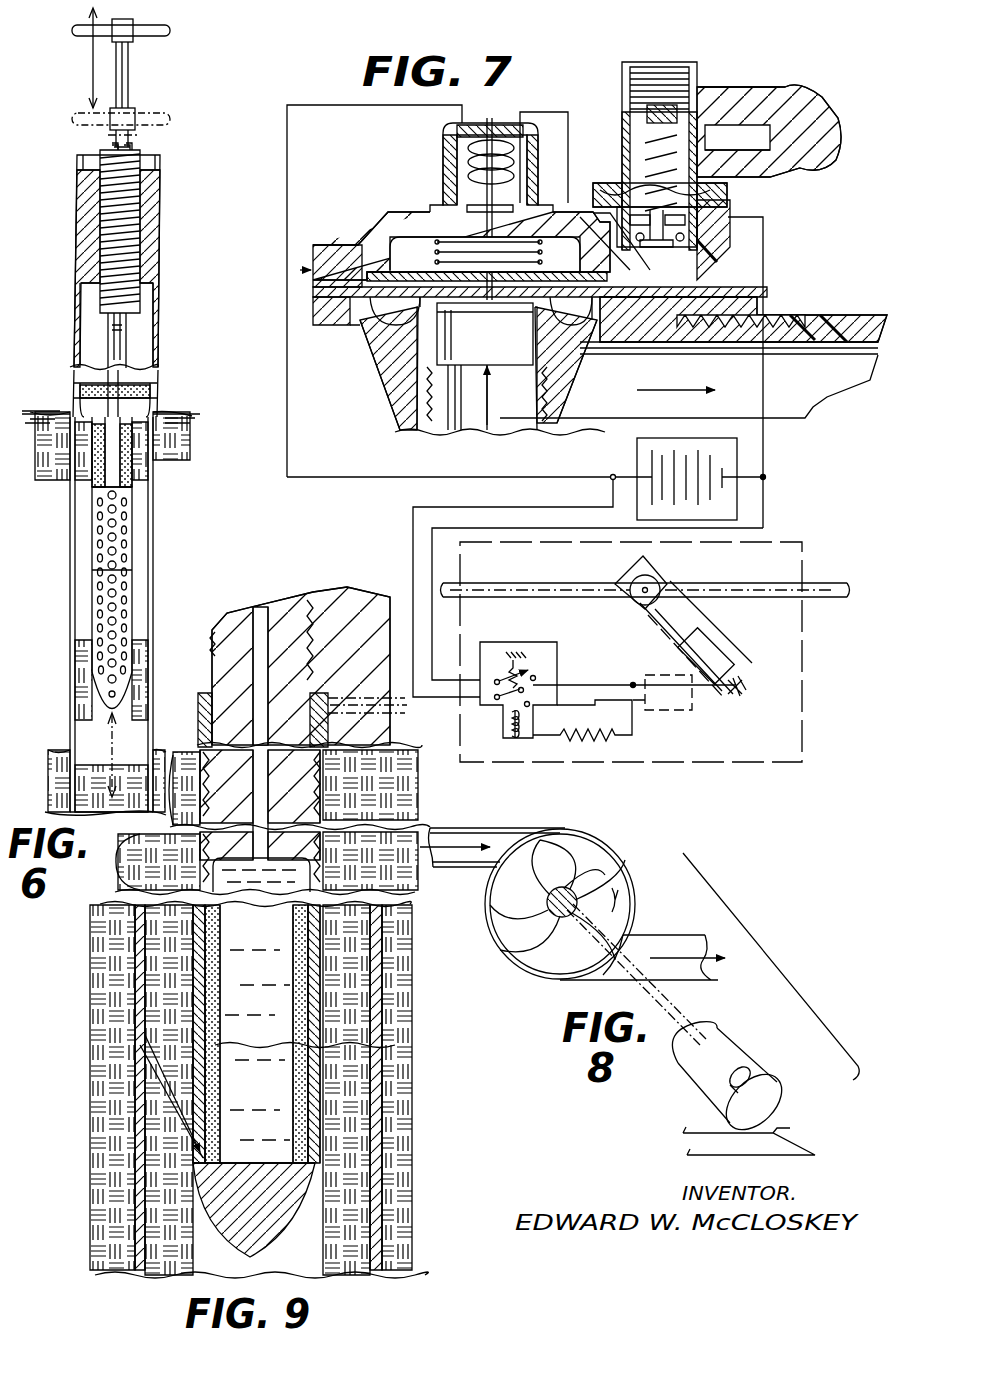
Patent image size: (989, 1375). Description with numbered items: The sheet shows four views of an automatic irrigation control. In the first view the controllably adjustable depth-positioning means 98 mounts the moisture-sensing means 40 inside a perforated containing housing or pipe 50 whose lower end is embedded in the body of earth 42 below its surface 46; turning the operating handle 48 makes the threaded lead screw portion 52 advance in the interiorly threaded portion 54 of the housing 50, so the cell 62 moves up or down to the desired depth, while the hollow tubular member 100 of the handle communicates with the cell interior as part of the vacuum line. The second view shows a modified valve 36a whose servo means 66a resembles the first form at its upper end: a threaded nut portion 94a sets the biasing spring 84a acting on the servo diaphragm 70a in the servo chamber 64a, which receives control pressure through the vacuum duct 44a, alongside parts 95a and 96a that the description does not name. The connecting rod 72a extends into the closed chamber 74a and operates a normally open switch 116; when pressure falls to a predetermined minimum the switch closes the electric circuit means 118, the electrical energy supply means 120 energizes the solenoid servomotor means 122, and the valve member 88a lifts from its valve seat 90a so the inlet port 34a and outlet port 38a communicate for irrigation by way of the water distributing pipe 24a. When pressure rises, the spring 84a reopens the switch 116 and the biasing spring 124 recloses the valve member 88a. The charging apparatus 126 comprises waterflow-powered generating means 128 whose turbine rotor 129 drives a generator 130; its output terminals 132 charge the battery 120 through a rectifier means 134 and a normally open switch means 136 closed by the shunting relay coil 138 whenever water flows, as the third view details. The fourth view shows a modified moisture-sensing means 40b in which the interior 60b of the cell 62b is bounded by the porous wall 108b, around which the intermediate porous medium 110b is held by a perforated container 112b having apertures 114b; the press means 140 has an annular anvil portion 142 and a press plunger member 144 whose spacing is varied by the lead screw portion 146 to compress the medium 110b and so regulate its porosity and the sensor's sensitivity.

In FIG. 6, the controllably adjustable depth-positioning means 98 is at (58, 158).
In FIG. 6, the operating handle 48 is at (154, 33).
In FIG. 6, the hollow tubular member 100 is at (132, 90).
In FIG. 6, the interiorly threaded portion 54 is at (148, 200).
In FIG. 6, the threaded lead screw portion 52 is at (154, 229).
In FIG. 6, the surface of the body of earth 46 is at (205, 413).
In FIG. 6, the body of earth 42 is at (160, 444).
In FIG. 6, the perforated containing housing or pipe 50 is at (154, 518).
In FIG. 6, the cell 62 is at (134, 590).
In FIG. 6, the moisture-sensing means 40 is at (172, 617).
In FIG. 7, the electrically energizable servomotor means 122 is at (441, 165).
In FIG. 7, the biasing spring 124 is at (392, 218).
In FIG. 7, the valve 36a is at (298, 268).
In FIG. 7, the valve seat 90a is at (395, 343).
In FIG. 7, the valve member 88a is at (523, 296).
In FIG. 7, the inlet port 34a is at (497, 413).
In FIG. 7, the threaded nut portion 94a is at (680, 63).
In FIG. 7, the valve stem 95a is at (622, 90).
In FIG. 7, the servo chamber 64a is at (683, 128).
In FIG. 7, the biasing spring 84a is at (645, 138).
In FIG. 7, the vacuum duct 44a is at (813, 97).
In FIG. 7, the servo means 66a is at (698, 143).
In FIG. 7, the servo diaphragm 70a is at (737, 142).
In FIG. 7, the flange 96a is at (728, 196).
In FIG. 7, the connecting rod 72a is at (722, 212).
In FIG. 7, the closed sealed chamber 74a is at (704, 226).
In FIG. 7, the switch 116 is at (730, 238).
In FIG. 7, the outlet port 38a is at (852, 378).
In FIG. 7, the electric circuit means 118 is at (766, 441).
In FIG. 8, the electric circuit means 118 is at (778, 1128).
In FIG. 7, the electrical energy supply means 120 is at (742, 505).
In FIG. 7, the charging apparatus 126 is at (870, 549).
In FIG. 7, the water distributing pipe 24a is at (583, 583).
In FIG. 7, the engine element 129 is at (636, 577).
In FIG. 8, the engine element 129 is at (598, 862).
In FIG. 7, the waterflow-powered electrical generating means 128 is at (682, 592).
In FIG. 8, the waterflow-powered electrical generating means 128 is at (700, 845).
In FIG. 7, the electrical generator 130 is at (722, 652).
In FIG. 8, the electrical generator 130 is at (728, 1052).
In FIG. 7, the output terminals 132 is at (742, 682).
In FIG. 8, the output terminals 132 is at (738, 1076).
In FIG. 7, the rectifier means 134 is at (670, 708).
In FIG. 7, the normally open switch means 136 is at (542, 641).
In FIG. 7, the shunting relay coil 138 is at (518, 740).
In FIG. 9, the actuating or lead screw portion 146 is at (372, 772).
In FIG. 9, the cell 62b is at (330, 930).
In FIG. 9, the press plunger member 144 is at (322, 950).
In FIG. 9, the interior of the cell 60b is at (330, 975).
In FIG. 9, the intermediate porous medium 110b is at (320, 1000).
In FIG. 9, the perforated container 112b is at (325, 1020).
In FIG. 9, the controllably adjustable press means 140 is at (190, 985).
In FIG. 9, the moisture-sensing means 40b is at (88, 1048).
In FIG. 9, the porous wall 108b is at (330, 1090).
In FIG. 9, the apertures 114b is at (340, 1120).
In FIG. 9, the annular anvil portion 142 is at (340, 1190).